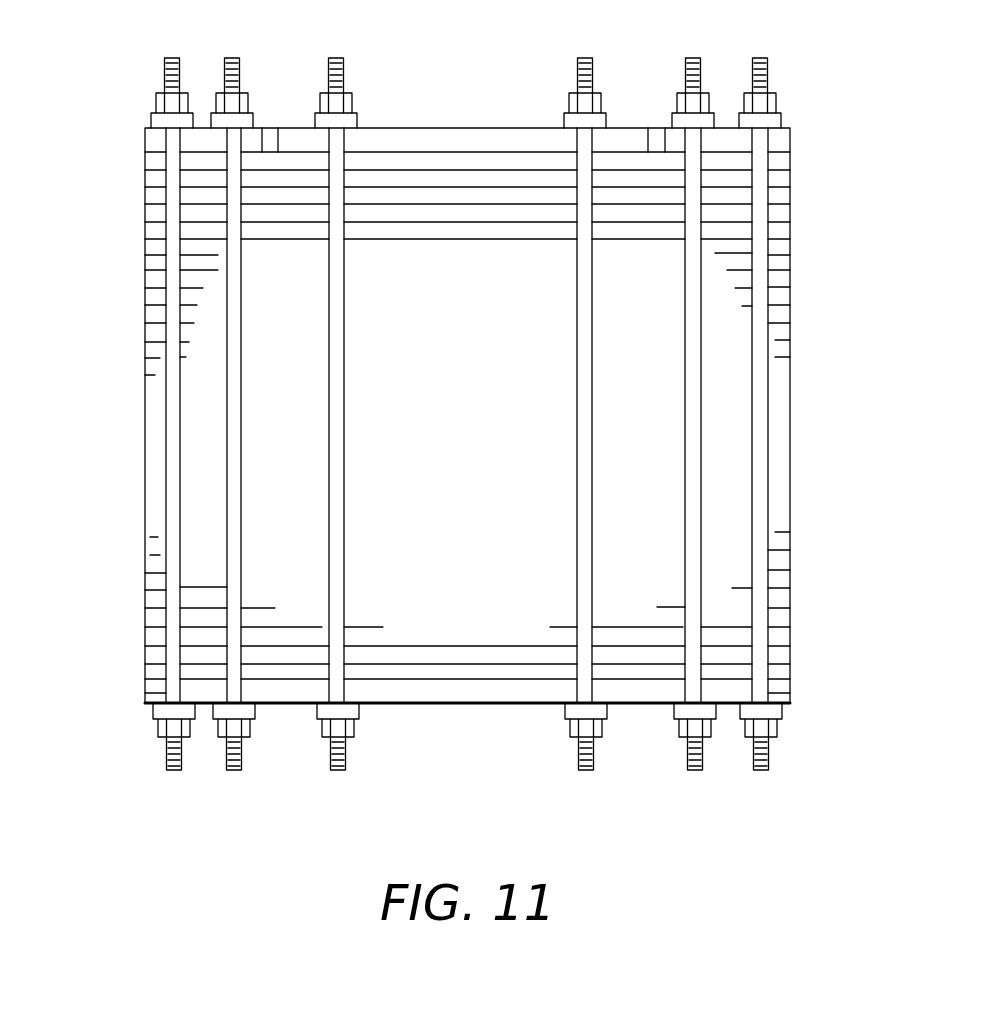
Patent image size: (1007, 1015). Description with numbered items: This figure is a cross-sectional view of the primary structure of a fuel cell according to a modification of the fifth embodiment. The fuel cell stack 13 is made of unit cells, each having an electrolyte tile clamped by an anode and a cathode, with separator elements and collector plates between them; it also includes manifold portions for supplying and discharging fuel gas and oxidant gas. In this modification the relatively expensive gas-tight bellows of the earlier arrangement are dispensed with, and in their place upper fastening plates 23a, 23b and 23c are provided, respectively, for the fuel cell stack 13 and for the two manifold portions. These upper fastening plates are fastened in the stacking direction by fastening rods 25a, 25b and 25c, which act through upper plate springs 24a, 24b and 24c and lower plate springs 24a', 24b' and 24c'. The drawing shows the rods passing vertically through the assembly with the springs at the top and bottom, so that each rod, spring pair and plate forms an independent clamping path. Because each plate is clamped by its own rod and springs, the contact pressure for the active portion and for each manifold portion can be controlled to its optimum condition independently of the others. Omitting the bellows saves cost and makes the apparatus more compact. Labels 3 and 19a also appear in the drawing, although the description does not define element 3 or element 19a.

The cell frame 3 is at (147, 313).
The fuel cell stack 13 is at (483, 610).
The bottom end plate 19a is at (155, 688).
The upper fastening plate 23a is at (487, 142).
The upper fastening plate 23b is at (778, 144).
The upper fastening plate 23c is at (157, 140).
The upper plate spring 24a is at (468, 64).
The upper plate spring 24b is at (726, 68).
The upper plate spring 24c is at (202, 64).
The lower plate spring 24a' is at (431, 764).
The lower plate spring 24b' is at (726, 766).
The lower plate spring 24c' is at (200, 765).
The fastening rod 25a is at (333, 580).
The fastening rod 25b is at (703, 497).
The fastening rod 25c is at (228, 542).